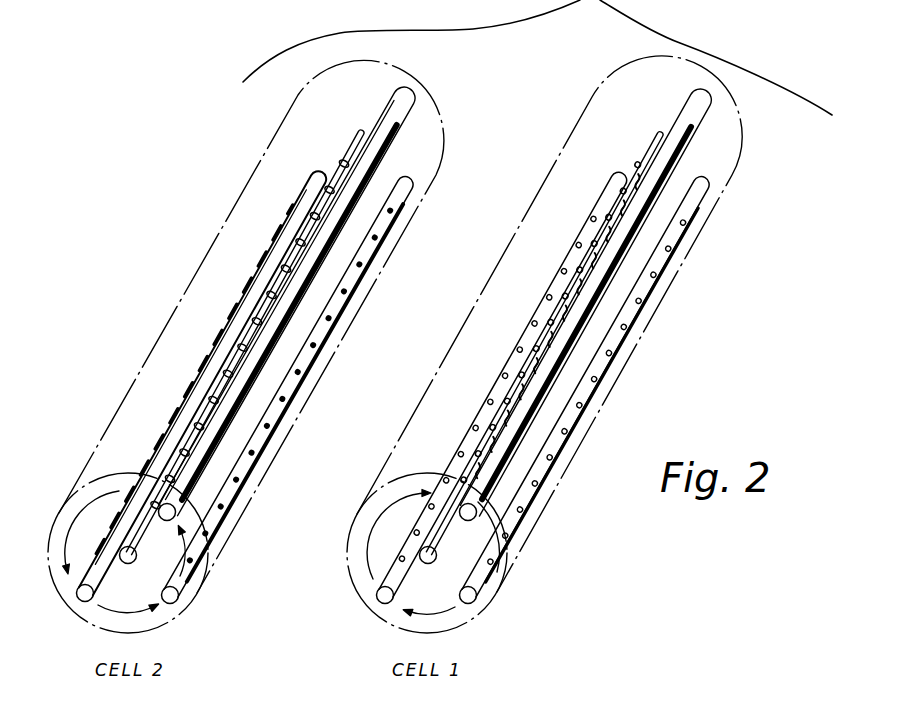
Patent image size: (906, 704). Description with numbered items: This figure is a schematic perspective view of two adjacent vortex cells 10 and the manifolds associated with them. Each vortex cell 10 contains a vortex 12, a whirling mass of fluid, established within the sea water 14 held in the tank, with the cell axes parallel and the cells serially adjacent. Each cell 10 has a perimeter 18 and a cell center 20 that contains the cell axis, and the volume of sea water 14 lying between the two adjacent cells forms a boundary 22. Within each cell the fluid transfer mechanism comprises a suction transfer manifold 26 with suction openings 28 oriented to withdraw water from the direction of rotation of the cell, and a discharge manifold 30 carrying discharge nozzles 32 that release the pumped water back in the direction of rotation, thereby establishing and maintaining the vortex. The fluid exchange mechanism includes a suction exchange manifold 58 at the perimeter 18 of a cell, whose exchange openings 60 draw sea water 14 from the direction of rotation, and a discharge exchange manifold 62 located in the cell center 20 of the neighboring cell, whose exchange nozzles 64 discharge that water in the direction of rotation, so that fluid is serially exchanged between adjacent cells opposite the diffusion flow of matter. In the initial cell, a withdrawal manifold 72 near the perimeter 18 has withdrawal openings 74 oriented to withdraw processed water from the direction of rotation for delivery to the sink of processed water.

The vortex cell 10 is at (304, 92).
The vortex 12 is at (84, 522).
The sea water 14 is at (175, 259).
The perimeter 18 is at (48, 553).
The cell center 20 is at (140, 601).
The boundaries 22 is at (410, 341).
The suction transfer manifold 26 is at (79, 598).
The suction openings 28 is at (288, 226).
The discharge manifold 30 is at (177, 601).
The discharge nozzles 32 is at (412, 206).
The suction exchange manifold 58 is at (175, 515).
The exchange openings 60 is at (378, 177).
The discharge exchange manifold 62 is at (136, 561).
The exchange nozzles 64 is at (340, 160).
The withdrawal manifold 72 is at (469, 521).
The withdrawal openings 74 is at (690, 114).